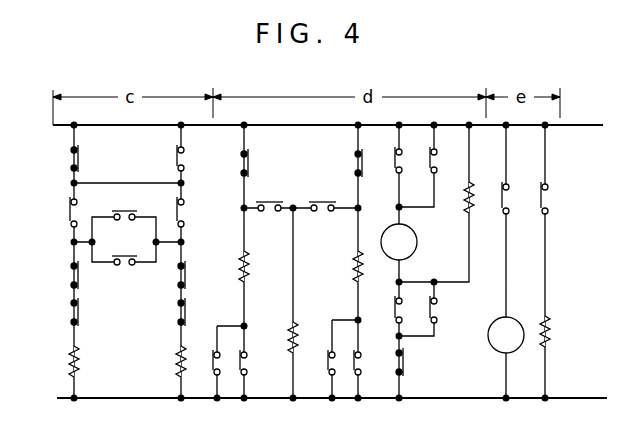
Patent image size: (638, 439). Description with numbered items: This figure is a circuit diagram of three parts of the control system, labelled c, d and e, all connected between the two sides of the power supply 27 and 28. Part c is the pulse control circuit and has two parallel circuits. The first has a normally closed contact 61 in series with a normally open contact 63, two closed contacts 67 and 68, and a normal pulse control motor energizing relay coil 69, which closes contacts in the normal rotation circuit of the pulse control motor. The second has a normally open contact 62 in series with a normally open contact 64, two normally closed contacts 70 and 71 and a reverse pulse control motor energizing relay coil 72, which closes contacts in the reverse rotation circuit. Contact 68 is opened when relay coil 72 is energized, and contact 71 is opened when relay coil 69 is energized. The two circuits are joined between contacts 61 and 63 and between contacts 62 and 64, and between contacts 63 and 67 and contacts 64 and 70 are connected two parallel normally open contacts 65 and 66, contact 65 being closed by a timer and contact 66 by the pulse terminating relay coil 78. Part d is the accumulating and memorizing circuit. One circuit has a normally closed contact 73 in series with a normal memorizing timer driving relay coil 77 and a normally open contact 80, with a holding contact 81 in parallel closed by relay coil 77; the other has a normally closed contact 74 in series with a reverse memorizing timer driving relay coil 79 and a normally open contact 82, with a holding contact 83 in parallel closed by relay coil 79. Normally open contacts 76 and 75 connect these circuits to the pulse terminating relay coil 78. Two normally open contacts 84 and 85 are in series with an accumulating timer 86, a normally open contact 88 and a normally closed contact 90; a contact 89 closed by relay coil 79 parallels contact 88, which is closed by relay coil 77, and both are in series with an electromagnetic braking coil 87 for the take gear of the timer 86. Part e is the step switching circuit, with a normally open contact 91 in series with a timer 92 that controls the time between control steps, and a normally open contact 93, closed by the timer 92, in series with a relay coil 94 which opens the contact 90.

The positive supply line 27 is at (68, 124).
The negative supply line 28 is at (62, 399).
The normally closed contact 61 is at (76, 162).
The normally open contact 62 is at (176, 162).
The normally open contact 63 is at (70, 211).
The normally open contact 64 is at (176, 211).
The normally open contact 65 is at (122, 211).
The normally open contact 66 is at (124, 257).
The closed contact 67 is at (76, 279).
The closed contact 68 is at (76, 316).
The normal pulse control motor energizing relay coil 69 is at (70, 361).
The normally closed contact 70 is at (181, 278).
The normally closed contact 71 is at (181, 313).
The reverse pulse control motor energizing relay coil 72 is at (178, 363).
The normally closed contact 73 is at (244, 167).
The normally closed contact 74 is at (358, 167).
The normally open contact 75 is at (321, 202).
The normally open contact 76 is at (269, 202).
The normal memorizing timer driving relay coil 77 is at (244, 271).
The pulse terminating relay coil 78 is at (292, 329).
The reverse memorizing timer driving relay coil 79 is at (358, 271).
The normally open contact 80 is at (213, 361).
The normally open holding contact 81 is at (247, 366).
The normally open contact 82 is at (328, 364).
The normally open holding contact 83 is at (354, 364).
The normally open contact 84 is at (395, 160).
The normally open contact 85 is at (430, 160).
The accumulating timer 86 is at (391, 229).
The electromagnetic braking coil 87 is at (467, 200).
The normally open contact 88 is at (395, 311).
The normally open contact 89 is at (430, 311).
The normally closed contact 90 is at (399, 363).
The normally open contact 91 is at (502, 198).
The timer 92 is at (491, 333).
The normally open contact 93 is at (541, 198).
The relay coil 94 is at (545, 321).